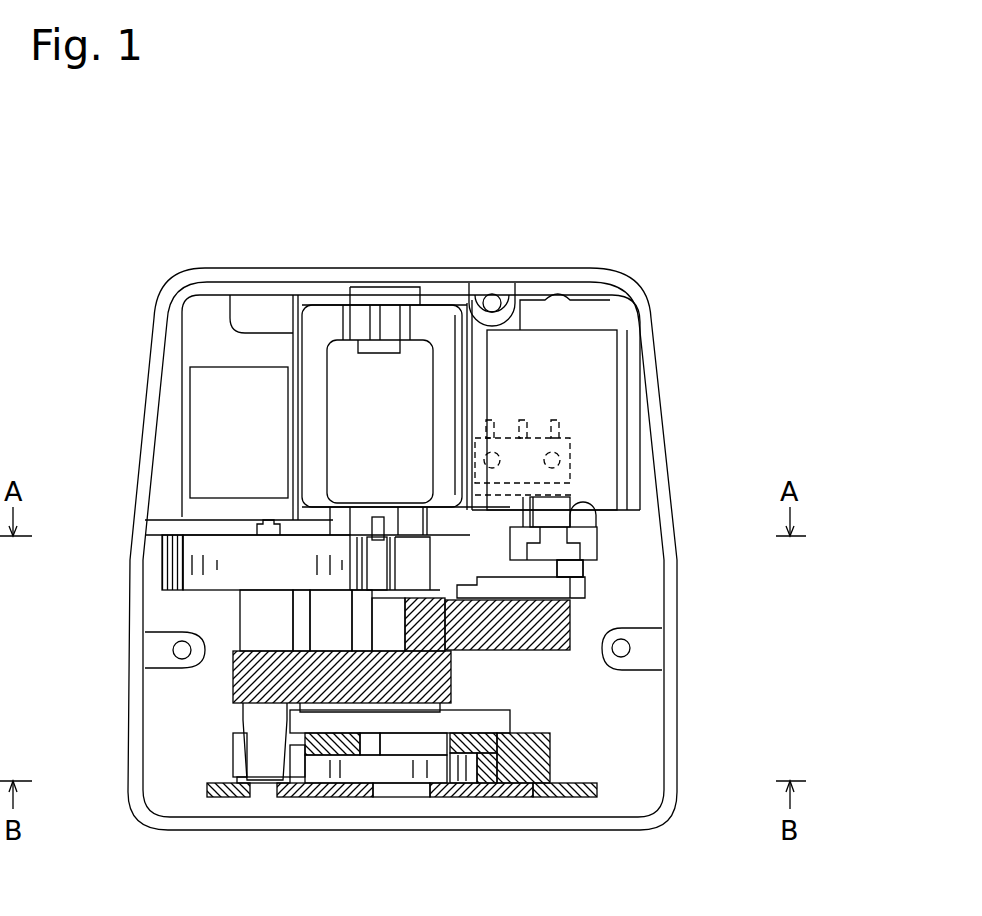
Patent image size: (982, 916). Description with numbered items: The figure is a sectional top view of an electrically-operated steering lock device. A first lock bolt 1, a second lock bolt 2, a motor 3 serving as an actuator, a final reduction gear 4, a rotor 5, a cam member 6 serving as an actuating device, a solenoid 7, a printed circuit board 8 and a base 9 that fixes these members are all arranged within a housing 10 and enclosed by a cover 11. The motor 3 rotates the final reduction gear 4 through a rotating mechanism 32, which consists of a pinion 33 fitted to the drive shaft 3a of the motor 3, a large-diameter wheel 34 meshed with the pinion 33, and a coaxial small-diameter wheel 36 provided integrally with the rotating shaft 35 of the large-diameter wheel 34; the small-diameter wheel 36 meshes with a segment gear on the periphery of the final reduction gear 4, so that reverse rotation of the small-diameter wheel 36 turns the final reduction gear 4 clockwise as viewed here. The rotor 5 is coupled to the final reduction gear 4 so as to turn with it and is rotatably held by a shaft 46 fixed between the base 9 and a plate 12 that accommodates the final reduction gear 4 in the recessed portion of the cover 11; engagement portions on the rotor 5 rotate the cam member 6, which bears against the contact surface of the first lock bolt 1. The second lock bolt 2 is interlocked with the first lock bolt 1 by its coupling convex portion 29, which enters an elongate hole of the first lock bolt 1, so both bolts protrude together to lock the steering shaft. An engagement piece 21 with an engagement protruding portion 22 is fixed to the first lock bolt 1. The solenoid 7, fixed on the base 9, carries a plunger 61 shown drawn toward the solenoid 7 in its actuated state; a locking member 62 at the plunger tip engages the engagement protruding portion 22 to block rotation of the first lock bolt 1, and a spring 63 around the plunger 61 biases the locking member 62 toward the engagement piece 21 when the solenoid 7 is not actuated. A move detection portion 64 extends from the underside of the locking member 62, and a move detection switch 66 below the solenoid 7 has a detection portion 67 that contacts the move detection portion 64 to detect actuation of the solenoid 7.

The first lock bolt 1 is at (548, 652).
The second lock bolt 2 is at (248, 677).
The motor 3 is at (358, 372).
The drive shaft 3a is at (378, 528).
The final reduction gear 4 is at (335, 772).
The rotor 5 is at (503, 790).
The cam member 6 is at (337, 625).
The solenoid 7 is at (604, 358).
The printed circuit board 8 is at (200, 338).
The base 9 is at (528, 318).
The housing 10 is at (228, 822).
The cover 11 is at (585, 797).
The plate 12 is at (460, 795).
The engagement piece 21 is at (563, 590).
The engagement protruding portion 22 is at (583, 572).
The coupling convex portion 29 is at (467, 617).
The rotating mechanism 32 is at (152, 573).
The pinion 33 is at (383, 563).
The large-diameter wheel 34 is at (180, 553).
The rotating shaft 35 is at (255, 636).
The small-diameter wheel 36 is at (235, 752).
The shaft 46 is at (400, 790).
The plunger 61 is at (565, 530).
The locking member 62 is at (585, 552).
The move detection portion 64 is at (570, 568).
The spring 63 is at (573, 497).
The move detection switch 66 is at (570, 440).
The detection portion 67 is at (553, 513).